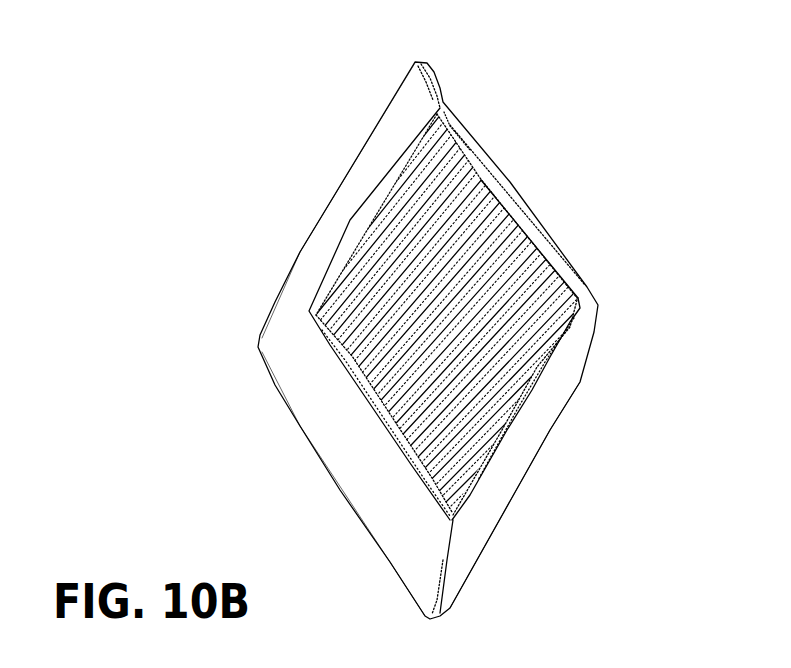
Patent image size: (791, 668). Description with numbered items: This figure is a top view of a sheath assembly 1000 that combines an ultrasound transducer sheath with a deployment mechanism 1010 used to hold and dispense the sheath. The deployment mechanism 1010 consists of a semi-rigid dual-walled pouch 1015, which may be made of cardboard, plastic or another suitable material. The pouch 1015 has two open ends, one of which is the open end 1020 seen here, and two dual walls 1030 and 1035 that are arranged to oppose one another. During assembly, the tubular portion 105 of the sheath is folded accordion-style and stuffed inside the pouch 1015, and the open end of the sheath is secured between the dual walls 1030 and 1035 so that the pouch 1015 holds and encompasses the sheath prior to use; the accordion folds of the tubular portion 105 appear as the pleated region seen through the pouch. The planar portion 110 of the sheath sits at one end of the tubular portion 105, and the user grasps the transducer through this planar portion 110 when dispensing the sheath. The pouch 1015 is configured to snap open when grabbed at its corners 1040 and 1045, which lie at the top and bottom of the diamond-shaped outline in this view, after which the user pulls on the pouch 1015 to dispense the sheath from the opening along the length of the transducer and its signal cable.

The sheath assembly 1000 is at (248, 56).
The deployment mechanism 1010 is at (225, 336).
The semi-rigid dual-walled pouch 1015 is at (318, 397).
The dual wall 1030 is at (317, 233).
The dual wall 1035 is at (503, 478).
The corner 1040 is at (434, 70).
The corner 1045 is at (441, 611).
The open end 1020 is at (500, 387).
The tubular portion 105 is at (488, 167).
The planar portion 110 is at (503, 247).